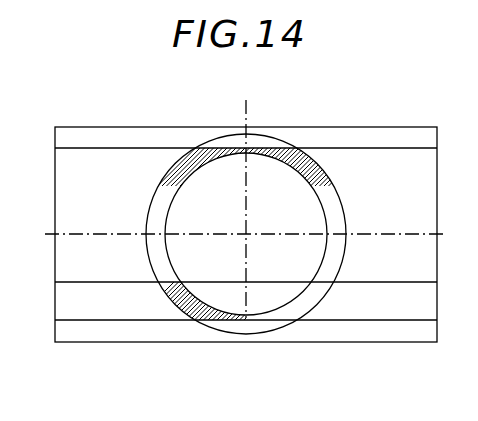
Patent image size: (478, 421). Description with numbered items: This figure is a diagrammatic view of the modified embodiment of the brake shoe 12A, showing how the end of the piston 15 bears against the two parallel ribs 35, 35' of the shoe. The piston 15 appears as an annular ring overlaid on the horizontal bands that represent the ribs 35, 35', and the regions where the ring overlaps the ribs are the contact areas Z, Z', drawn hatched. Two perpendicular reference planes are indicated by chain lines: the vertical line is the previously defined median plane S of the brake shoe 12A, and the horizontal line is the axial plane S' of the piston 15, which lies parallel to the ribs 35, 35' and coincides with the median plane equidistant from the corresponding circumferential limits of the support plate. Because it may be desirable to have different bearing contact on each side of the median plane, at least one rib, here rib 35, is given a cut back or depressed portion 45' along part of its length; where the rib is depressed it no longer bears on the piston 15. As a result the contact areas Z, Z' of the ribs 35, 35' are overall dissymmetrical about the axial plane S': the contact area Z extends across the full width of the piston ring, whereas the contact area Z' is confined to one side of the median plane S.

The brake shoe 12A is at (151, 126).
The rib 35 is at (246, 119).
The rib 35' is at (246, 357).
The cut back or depressed portion 45' is at (246, 329).
The piston 15 is at (148, 250).
The contact area Z is at (256, 166).
The contact area Z' is at (202, 300).
The median plane S is at (261, 205).
The axial plane S' is at (254, 214).